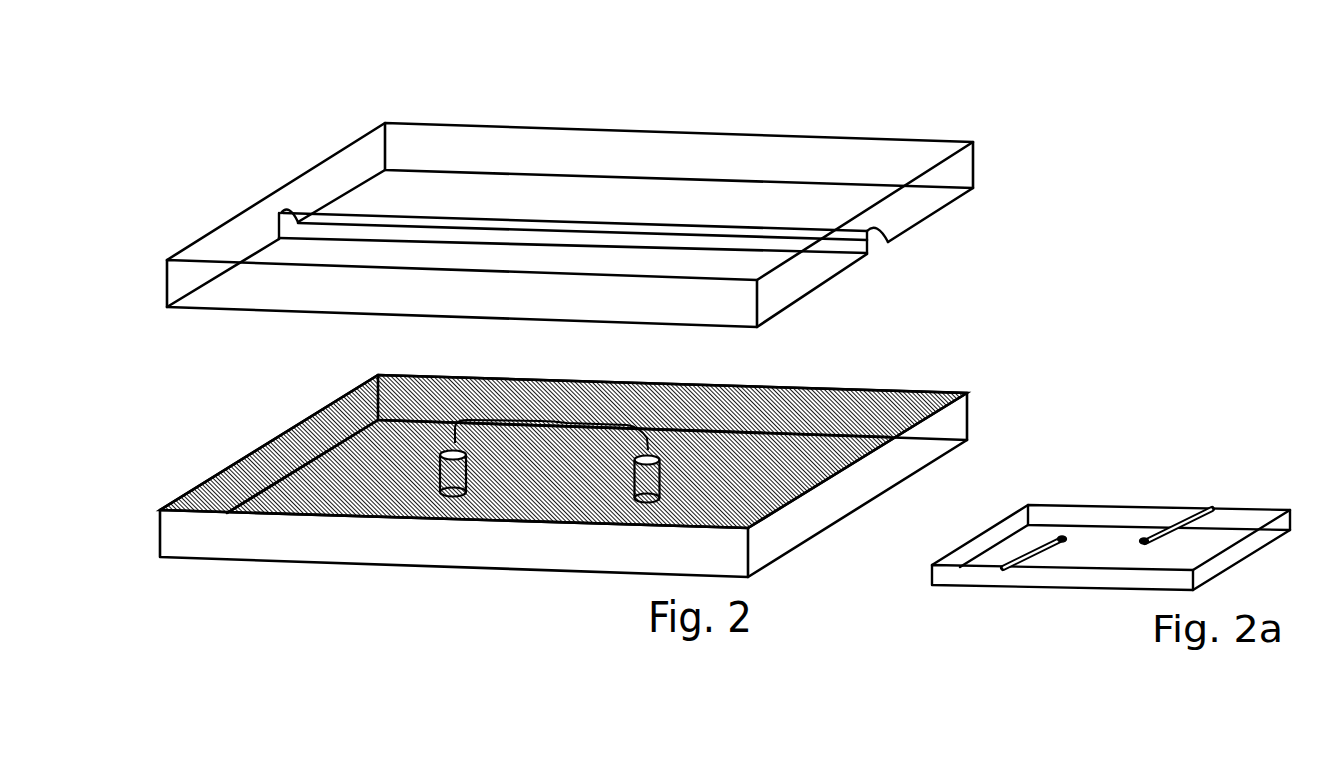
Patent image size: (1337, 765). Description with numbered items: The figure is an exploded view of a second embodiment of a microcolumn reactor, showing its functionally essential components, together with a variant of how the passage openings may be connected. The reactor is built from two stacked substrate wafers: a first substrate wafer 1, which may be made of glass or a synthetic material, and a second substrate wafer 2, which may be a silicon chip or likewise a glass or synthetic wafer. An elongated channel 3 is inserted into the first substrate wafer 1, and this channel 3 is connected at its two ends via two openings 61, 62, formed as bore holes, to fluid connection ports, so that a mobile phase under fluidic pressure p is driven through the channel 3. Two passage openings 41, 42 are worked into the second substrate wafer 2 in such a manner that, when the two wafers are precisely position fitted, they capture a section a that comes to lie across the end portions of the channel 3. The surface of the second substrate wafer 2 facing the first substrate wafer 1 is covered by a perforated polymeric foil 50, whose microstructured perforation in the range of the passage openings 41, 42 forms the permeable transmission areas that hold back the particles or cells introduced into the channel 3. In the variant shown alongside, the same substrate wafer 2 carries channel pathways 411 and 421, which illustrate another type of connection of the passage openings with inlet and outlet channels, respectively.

In FIG. 2, the first substrate wafer 1 is at (907, 155).
In FIG. 2, the second substrate wafer 2 is at (907, 400).
In FIG. 2A, the second substrate wafer 2 is at (1043, 513).
In FIG. 2, the channel 3 is at (567, 227).
In FIG. 2, the opening 61 is at (285, 213).
In FIG. 2, the opening 62 is at (900, 247).
In FIG. 2, the polymeric foil 50 is at (347, 428).
In FIG. 2, the passage opening 41 is at (425, 502).
In FIG. 2A, the passage opening 41 is at (1063, 545).
In FIG. 2, the passage opening 42 is at (622, 513).
In FIG. 2A, the passage opening 42 is at (1143, 538).
In FIG. 2A, the channel section 411 is at (1013, 568).
In FIG. 2A, the channel section 421 is at (1193, 508).
In FIG. 2, the section between passage openings a is at (553, 418).
In FIG. 2, the fluidic pressure p is at (250, 223).